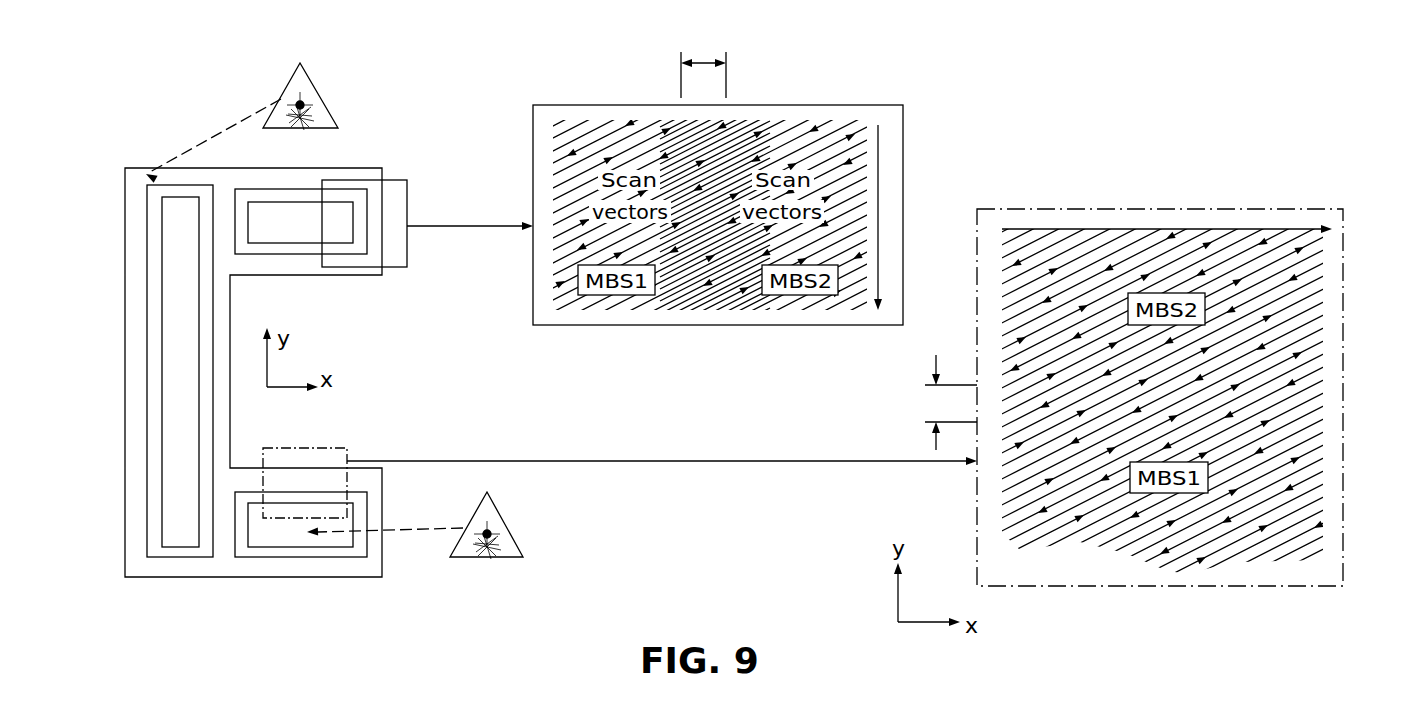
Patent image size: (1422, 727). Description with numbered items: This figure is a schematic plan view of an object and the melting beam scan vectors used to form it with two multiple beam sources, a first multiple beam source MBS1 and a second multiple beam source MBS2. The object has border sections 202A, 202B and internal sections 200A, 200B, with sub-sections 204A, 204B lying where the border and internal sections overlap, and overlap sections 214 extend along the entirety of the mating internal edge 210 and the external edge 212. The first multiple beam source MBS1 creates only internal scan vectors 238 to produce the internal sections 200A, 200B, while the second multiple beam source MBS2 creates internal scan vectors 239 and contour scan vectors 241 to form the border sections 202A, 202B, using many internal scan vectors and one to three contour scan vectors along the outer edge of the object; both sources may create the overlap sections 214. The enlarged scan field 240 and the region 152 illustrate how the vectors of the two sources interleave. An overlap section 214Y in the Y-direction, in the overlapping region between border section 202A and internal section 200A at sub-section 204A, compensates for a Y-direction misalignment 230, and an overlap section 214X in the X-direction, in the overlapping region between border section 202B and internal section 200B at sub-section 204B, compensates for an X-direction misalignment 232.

The build platform / powder bed 152 is at (138, 291).
The border section 202B is at (302, 195).
The overlap section 214 is at (280, 195).
The internal section (sub-section) 204B is at (360, 222).
The internal edge 210 is at (265, 242).
The external edge 212 is at (275, 255).
The internal section 200B is at (308, 237).
The border section 202A is at (362, 507).
The internal section (sub-section) 204A is at (313, 497).
The internal section 200A is at (290, 535).
The internal scan vectors 238 is at (597, 140).
The internal scan vectors / contour scan vectors 239 is at (803, 137).
The X-direction misalignment 232 is at (679, 75).
The contour scan vectors 241 is at (878, 176).
The overlap section in X-direction 214X is at (703, 275).
The scan layer region 240 is at (1103, 230).
The Y-direction misalignment 230 is at (945, 402).
The overlap section in Y-direction 214Y is at (1297, 408).
The first multiple beam source MBS1 is at (505, 517).
The second multiple beam source MBS2 is at (318, 93).